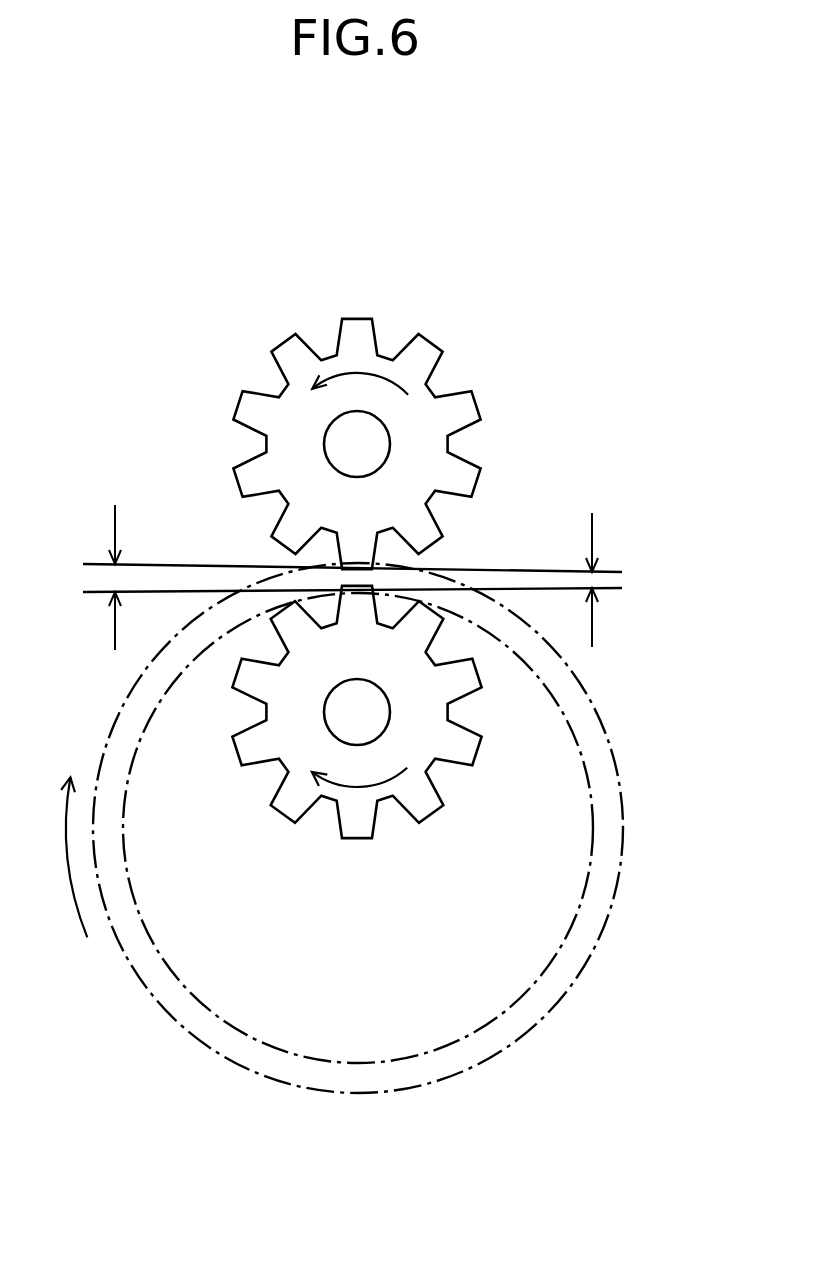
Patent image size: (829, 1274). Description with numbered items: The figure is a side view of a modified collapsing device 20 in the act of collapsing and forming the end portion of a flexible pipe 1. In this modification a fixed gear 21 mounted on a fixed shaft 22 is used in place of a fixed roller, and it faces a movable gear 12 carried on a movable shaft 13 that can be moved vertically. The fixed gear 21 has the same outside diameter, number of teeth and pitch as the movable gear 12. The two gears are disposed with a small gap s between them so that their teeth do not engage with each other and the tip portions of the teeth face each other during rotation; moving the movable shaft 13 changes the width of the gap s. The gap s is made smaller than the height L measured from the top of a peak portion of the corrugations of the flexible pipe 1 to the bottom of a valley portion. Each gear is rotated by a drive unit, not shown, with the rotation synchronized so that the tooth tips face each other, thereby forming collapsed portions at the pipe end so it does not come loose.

The flexible pipe 1 is at (617, 740).
The movable gear 12 is at (425, 356).
The movable shaft 13 is at (343, 457).
The collapsing device 20 is at (324, 401).
The fixed gear 21 is at (333, 803).
The fixed shaft 22 is at (342, 724).
The height L is at (113, 583).
The gap s is at (622, 571).